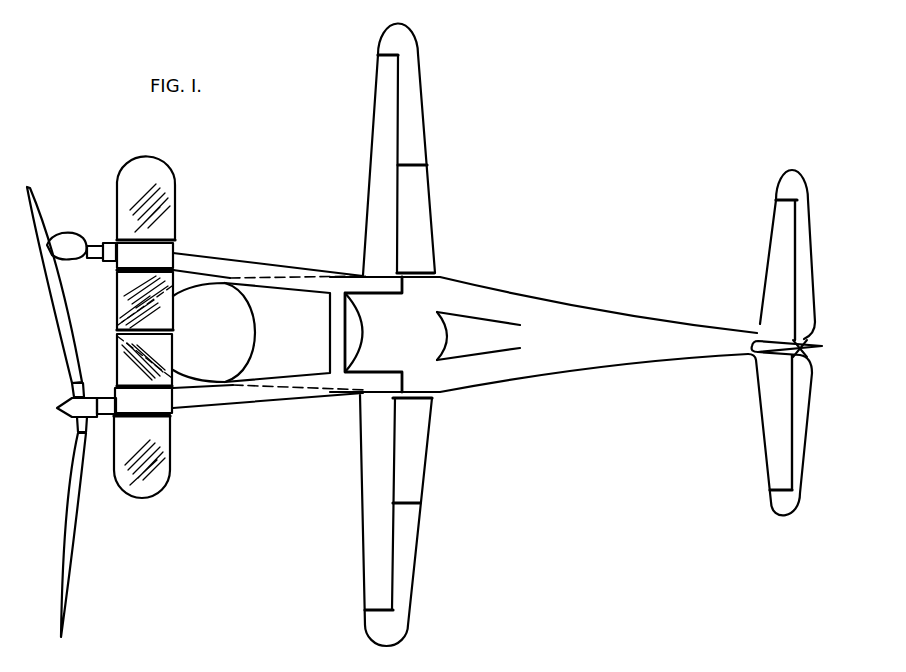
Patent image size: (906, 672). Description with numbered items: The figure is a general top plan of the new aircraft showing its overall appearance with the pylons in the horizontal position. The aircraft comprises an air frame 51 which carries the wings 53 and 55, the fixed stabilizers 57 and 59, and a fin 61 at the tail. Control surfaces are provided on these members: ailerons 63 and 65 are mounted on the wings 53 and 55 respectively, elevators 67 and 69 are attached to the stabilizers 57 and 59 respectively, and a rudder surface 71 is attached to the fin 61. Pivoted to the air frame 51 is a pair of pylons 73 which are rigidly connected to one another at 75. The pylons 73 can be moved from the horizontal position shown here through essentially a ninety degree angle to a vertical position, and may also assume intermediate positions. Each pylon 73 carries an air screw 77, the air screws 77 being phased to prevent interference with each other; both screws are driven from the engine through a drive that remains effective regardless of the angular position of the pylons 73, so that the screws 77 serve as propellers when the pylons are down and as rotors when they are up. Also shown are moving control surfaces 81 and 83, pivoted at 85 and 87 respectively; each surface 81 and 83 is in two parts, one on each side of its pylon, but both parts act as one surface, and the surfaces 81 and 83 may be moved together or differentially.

The air frame 51 is at (483, 378).
The wing 53 is at (370, 467).
The wing 55 is at (377, 197).
The fixed stabilizer 57 is at (766, 413).
The fixed stabilizer 59 is at (773, 277).
The fin 61 is at (766, 343).
The aileron 63 is at (412, 545).
The aileron 65 is at (417, 127).
The elevator 67 is at (800, 435).
The elevator 69 is at (807, 300).
The rudder surface 71 is at (800, 355).
The pylon 73 is at (247, 260).
The rigid connection 75 is at (337, 338).
The air screw 77 is at (70, 259).
The moving control surface 81 is at (163, 363).
The moving control surface 83 is at (160, 297).
The pivot 85 is at (130, 417).
The pivot 87 is at (131, 250).